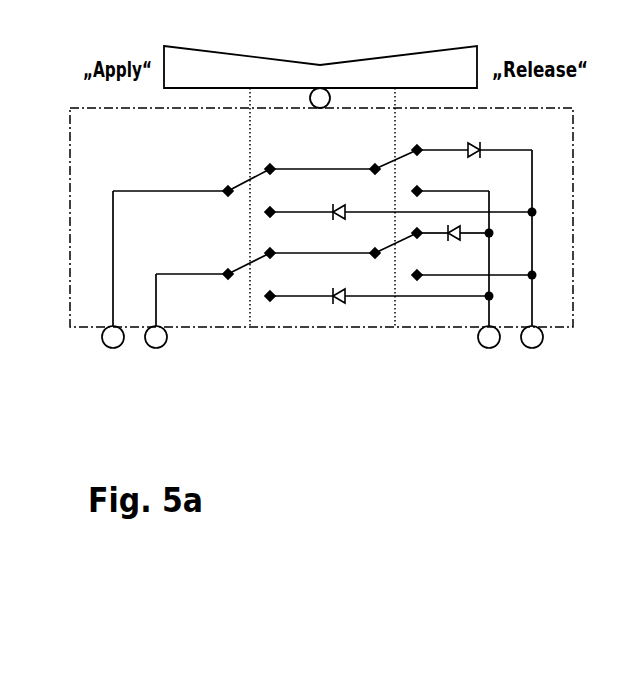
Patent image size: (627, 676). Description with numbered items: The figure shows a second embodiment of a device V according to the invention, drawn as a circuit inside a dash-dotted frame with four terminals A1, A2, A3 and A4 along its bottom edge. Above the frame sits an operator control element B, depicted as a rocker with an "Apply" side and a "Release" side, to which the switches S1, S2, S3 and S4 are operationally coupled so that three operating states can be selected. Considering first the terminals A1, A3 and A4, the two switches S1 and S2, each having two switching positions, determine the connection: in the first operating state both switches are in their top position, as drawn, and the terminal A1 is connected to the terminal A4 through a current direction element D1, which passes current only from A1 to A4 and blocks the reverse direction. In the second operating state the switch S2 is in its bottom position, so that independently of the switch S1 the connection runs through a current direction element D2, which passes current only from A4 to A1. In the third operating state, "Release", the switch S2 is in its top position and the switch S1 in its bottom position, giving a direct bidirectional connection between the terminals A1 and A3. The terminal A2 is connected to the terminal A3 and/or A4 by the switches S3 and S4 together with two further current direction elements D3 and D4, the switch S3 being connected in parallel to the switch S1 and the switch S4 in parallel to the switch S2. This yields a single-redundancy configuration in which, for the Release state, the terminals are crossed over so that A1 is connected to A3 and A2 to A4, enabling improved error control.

The operator control element B is at (200, 81).
The device V is at (117, 149).
The switch S1 is at (386, 158).
The switch S2 is at (290, 179).
The switch S3 is at (386, 240).
The switch S4 is at (290, 261).
The current direction element D1 is at (474, 136).
The current direction element D2 is at (398, 197).
The current direction element D3 is at (453, 248).
The current direction element D4 is at (377, 283).
The terminal A1 is at (164, 289).
The terminal A2 is at (185, 330).
The terminal A3 is at (458, 287).
The terminal A4 is at (481, 269).